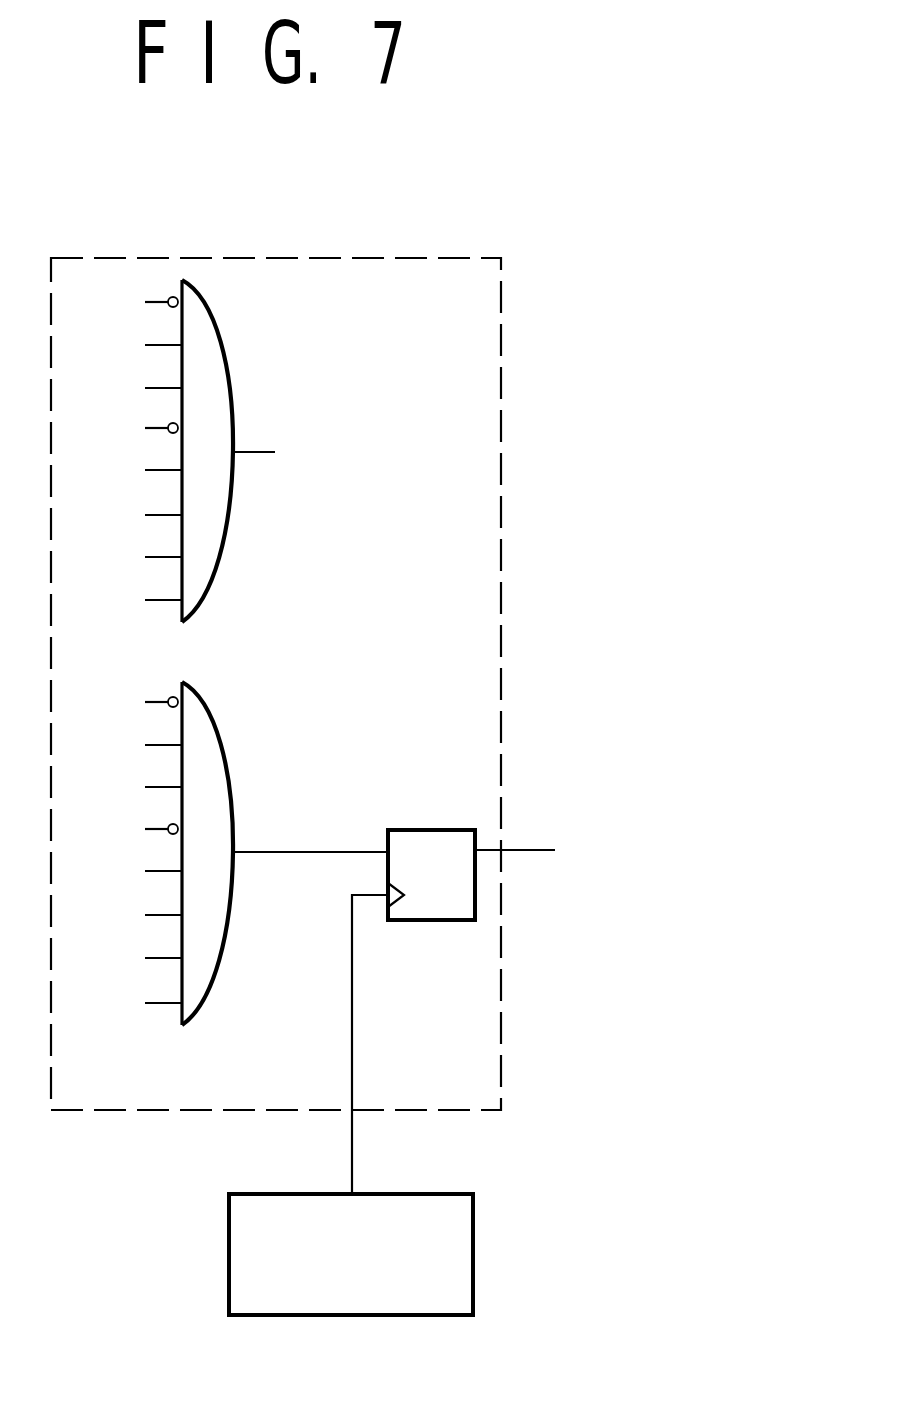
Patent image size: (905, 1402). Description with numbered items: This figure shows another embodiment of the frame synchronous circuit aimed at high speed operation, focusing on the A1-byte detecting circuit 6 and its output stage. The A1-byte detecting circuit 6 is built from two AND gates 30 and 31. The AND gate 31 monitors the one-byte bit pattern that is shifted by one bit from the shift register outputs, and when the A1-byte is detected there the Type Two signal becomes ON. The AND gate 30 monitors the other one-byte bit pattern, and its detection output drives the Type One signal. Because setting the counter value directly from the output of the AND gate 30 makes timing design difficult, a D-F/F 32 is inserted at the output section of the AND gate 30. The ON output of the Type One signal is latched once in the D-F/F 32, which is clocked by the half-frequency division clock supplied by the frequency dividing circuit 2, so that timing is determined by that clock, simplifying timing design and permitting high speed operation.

The ½-frequency dividing circuit 2 is at (473, 1250).
The A1-byte detecting circuit 6 is at (271, 258).
The AND gate 30 is at (221, 976).
The AND gate 31 is at (221, 575).
The D-F/F 32 is at (432, 830).